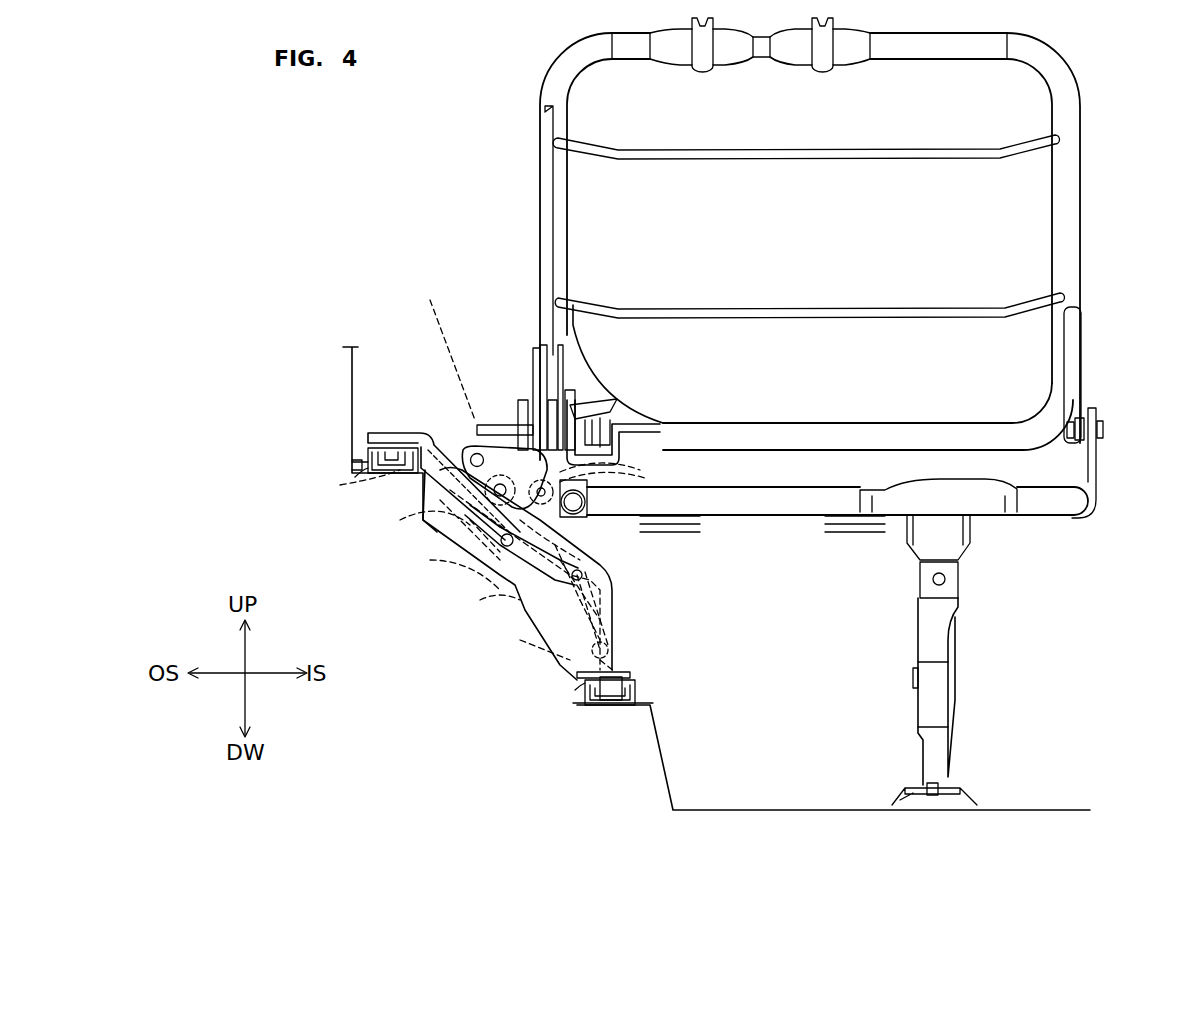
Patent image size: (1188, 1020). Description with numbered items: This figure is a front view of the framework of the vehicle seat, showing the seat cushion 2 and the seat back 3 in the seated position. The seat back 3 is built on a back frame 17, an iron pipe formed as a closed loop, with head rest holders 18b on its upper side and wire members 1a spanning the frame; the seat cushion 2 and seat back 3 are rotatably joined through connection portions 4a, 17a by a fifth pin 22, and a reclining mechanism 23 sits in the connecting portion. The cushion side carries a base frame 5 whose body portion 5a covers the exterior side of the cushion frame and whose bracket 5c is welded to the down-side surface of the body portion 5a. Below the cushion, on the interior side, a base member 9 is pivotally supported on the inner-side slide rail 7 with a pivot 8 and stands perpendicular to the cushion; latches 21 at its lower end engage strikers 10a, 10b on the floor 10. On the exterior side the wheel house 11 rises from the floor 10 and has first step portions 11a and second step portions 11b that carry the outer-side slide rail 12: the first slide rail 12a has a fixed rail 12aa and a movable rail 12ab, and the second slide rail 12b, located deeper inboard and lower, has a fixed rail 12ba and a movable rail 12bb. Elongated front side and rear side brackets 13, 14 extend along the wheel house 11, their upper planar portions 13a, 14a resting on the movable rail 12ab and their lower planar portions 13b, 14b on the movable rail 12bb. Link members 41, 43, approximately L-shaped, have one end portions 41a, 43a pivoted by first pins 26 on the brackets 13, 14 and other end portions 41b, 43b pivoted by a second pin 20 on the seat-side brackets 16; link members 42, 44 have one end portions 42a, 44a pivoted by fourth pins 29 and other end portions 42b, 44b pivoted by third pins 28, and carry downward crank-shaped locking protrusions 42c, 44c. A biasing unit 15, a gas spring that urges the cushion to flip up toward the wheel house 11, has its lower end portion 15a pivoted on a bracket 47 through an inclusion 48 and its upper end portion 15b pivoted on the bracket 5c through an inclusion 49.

The seat back frame cross rod 1a is at (808, 180).
The seat cushion 2 is at (1055, 528).
The seat back 3 is at (844, 231).
The connection portion 4a is at (1098, 460).
The base frame 5 is at (638, 398).
The body portion 5a is at (612, 448).
The bracket 5c is at (645, 470).
The inner-side slide rail 7 is at (912, 560).
The pivot 8 is at (945, 579).
The base member 9 is at (960, 655).
The floor 10 is at (800, 808).
The striker 10a is at (983, 750).
The striker 10b is at (950, 790).
The wheel house 11 is at (579, 598).
The first step portion 11a is at (358, 462).
The second step portion 11b is at (640, 690).
The outer-side slide rail 12 is at (394, 434).
The first slide rail 12a is at (431, 434).
The fixed rail 12aa is at (420, 430).
The movable rail 12ab is at (385, 447).
The second slide rail 12b is at (597, 743).
The fixed rail 12ba is at (583, 690).
The movable rail 12bb is at (612, 690).
The front side bracket 13 is at (413, 545).
The planar portion 13a is at (302, 440).
The planar portion 13b is at (511, 714).
The rear side bracket 14 is at (470, 530).
The planar portion 14a is at (362, 458).
The planar portion 14b is at (575, 695).
The biasing unit 15 is at (637, 576).
The lower end portion 15a is at (605, 630).
The upper end portion 15b is at (588, 512).
The seat-side bracket 16 is at (482, 425).
The back frame 17 is at (1045, 60).
The connection portion 17a is at (1082, 338).
The head rest holder 18b is at (825, 40).
The second pin 20 is at (474, 455).
The latch 21 is at (925, 788).
The fifth pin 22 is at (1104, 426).
The reclining mechanism 23 is at (516, 380).
The first pin 26 is at (500, 560).
The third pin 28 is at (460, 520).
The fourth pin 29 is at (570, 590).
The link member 41 is at (391, 523).
The one end portion 41a is at (391, 600).
The other end portion 41b is at (329, 490).
The link member 42 is at (625, 571).
The one end portion 42a is at (659, 603).
The other end portion 42b is at (447, 346).
The locking protrusion 42c is at (454, 638).
The link member 43 is at (430, 505).
The one end portion 43a is at (440, 580).
The other end portion 43b is at (400, 478).
The link member 44 is at (590, 555).
The one end portion 44a is at (610, 600).
The other end portion 44b is at (455, 400).
The locking protrusion 44c is at (490, 610).
The bracket 47 is at (530, 660).
The inclusion 48 is at (625, 672).
The inclusion 49 is at (552, 500).